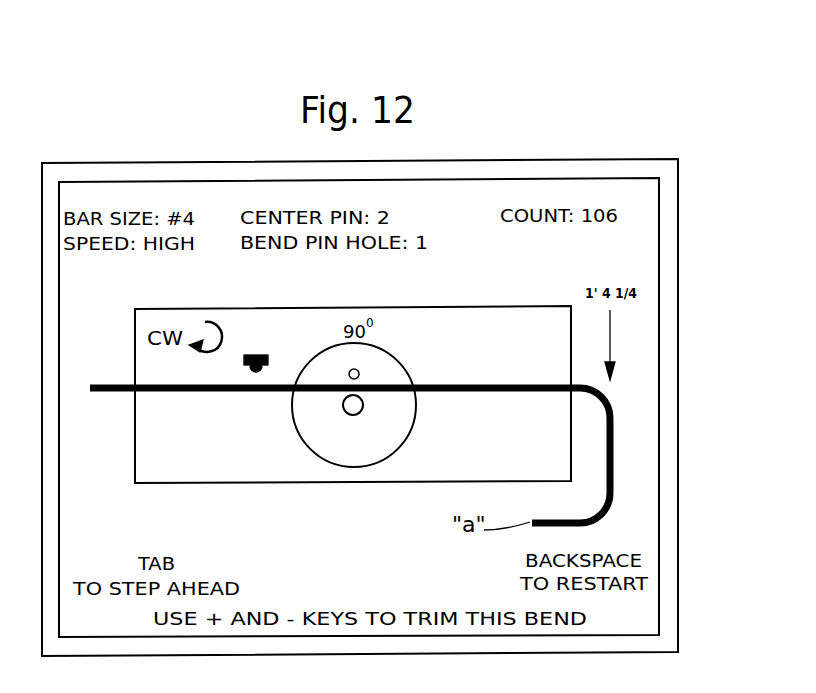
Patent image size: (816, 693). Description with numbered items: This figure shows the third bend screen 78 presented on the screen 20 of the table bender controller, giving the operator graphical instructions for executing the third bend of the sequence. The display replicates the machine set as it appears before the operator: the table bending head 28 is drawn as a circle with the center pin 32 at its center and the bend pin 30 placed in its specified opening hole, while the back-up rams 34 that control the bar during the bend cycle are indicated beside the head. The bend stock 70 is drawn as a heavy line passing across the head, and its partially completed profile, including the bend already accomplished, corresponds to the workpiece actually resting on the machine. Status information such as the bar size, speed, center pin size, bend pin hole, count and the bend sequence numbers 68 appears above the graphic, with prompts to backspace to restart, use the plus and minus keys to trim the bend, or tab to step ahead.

The third bend screen 78 is at (545, 102).
The bend sequence numbers 68 is at (649, 237).
The back-up rams 34 is at (251, 355).
The table bending head 28 is at (353, 455).
The bend pin 30 is at (359, 372).
The center pin 32 is at (364, 407).
The bend stock 70 is at (487, 386).
The screen 20 is at (415, 431).